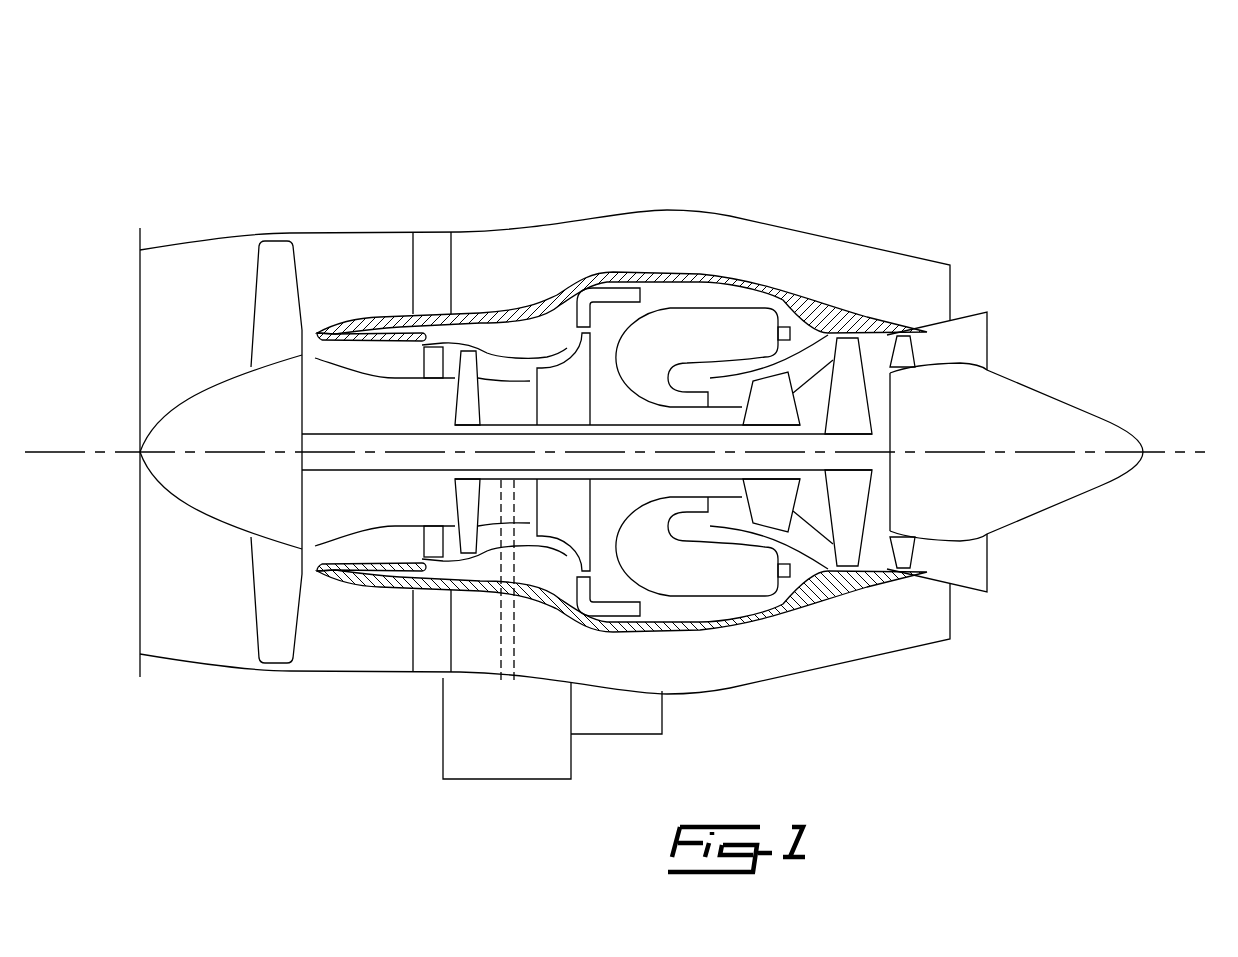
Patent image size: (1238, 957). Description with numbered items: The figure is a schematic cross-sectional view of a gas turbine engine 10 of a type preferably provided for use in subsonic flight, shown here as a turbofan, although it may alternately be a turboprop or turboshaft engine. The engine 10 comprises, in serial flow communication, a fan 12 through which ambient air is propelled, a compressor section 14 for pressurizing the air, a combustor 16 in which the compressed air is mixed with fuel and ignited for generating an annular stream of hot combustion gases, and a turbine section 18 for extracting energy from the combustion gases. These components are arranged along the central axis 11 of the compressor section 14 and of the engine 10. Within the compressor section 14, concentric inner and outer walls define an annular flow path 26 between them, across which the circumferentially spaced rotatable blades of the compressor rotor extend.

The gas turbine engine 10 is at (615, 405).
The central axis 11 is at (1177, 452).
The fan 12 is at (273, 588).
The compressor section 14 is at (500, 363).
The combustor 16 is at (693, 325).
The turbine section 18 is at (810, 512).
The annular flow path 26 is at (525, 370).